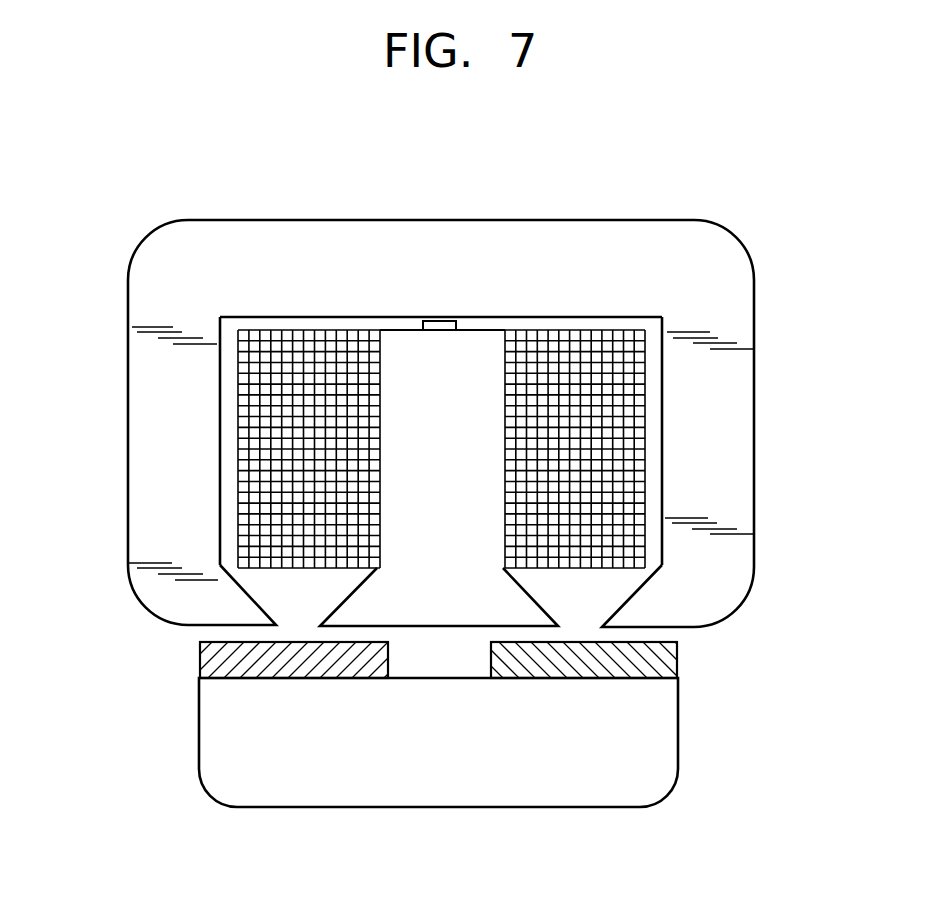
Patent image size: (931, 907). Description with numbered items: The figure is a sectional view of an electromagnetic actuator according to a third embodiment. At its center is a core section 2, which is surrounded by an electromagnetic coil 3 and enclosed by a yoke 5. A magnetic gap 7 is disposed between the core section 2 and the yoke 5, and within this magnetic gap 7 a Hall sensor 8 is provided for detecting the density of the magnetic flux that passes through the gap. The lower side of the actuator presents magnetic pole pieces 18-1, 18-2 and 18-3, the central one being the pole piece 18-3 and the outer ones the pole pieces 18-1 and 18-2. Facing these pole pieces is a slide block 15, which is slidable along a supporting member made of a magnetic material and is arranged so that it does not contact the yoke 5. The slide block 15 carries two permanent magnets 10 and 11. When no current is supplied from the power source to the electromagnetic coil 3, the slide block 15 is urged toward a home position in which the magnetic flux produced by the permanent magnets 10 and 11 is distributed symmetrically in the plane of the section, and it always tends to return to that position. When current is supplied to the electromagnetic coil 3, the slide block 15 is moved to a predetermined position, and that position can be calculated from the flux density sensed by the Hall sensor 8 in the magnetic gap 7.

The core section 2 is at (473, 368).
The electromagnetic coil 3 is at (584, 372).
The yoke 5 is at (728, 382).
The magnetic gap 7 is at (398, 323).
The Hall sensor 8 is at (438, 325).
The permanent magnet 10 is at (230, 651).
The permanent magnet 11 is at (635, 665).
The slide block 15 is at (638, 778).
The magnetic pole piece 18-1 is at (233, 616).
The magnetic pole piece 18-2 is at (632, 617).
The magnetic pole piece 18-3 is at (428, 613).